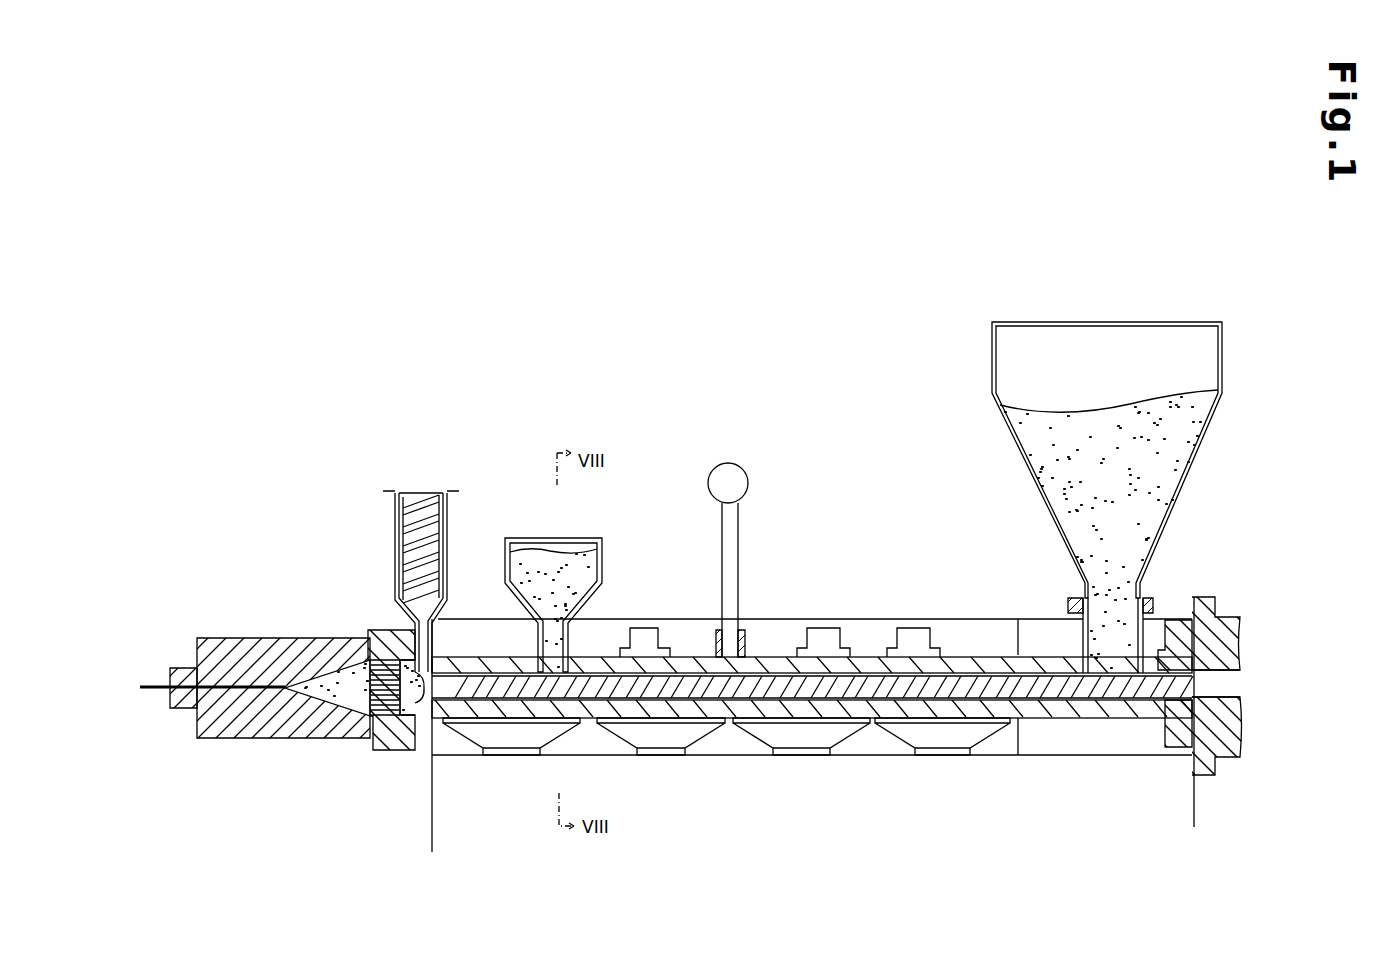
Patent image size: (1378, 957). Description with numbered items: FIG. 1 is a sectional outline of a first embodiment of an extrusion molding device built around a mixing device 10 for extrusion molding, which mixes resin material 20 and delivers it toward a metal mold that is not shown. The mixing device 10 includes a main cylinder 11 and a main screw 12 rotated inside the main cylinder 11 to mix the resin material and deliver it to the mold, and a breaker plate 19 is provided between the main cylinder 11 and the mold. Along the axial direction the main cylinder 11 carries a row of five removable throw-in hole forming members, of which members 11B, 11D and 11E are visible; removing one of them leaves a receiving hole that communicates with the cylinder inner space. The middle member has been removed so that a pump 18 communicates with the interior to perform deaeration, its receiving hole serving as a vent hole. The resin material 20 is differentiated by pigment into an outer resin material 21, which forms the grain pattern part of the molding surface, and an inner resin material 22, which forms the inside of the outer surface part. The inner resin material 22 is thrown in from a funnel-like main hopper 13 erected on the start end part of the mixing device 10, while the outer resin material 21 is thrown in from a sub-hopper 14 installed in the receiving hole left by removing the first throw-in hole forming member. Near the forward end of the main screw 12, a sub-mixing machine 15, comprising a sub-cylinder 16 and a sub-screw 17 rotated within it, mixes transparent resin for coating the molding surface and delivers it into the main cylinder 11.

The mixing device for extrusion molding 10 is at (816, 280).
The main cylinder 11 is at (962, 657).
The throw-in hole forming member 11B is at (652, 628).
The throw-in hole forming member 11D is at (820, 628).
The throw-in hole forming member 11E is at (905, 628).
The main screw 12 is at (1017, 665).
The main hopper 13 is at (1196, 466).
The sub-hopper 14 is at (602, 548).
The sub-mixing machine 15 is at (393, 508).
The sub-cylinder 16 is at (398, 545).
The sub-screw 17 is at (418, 498).
The pump 18 is at (740, 466).
The breaker plate 19 is at (362, 710).
The resin material 20 is at (838, 465).
The outer resin material 21 is at (525, 555).
The inner resin material 22 is at (1085, 425).